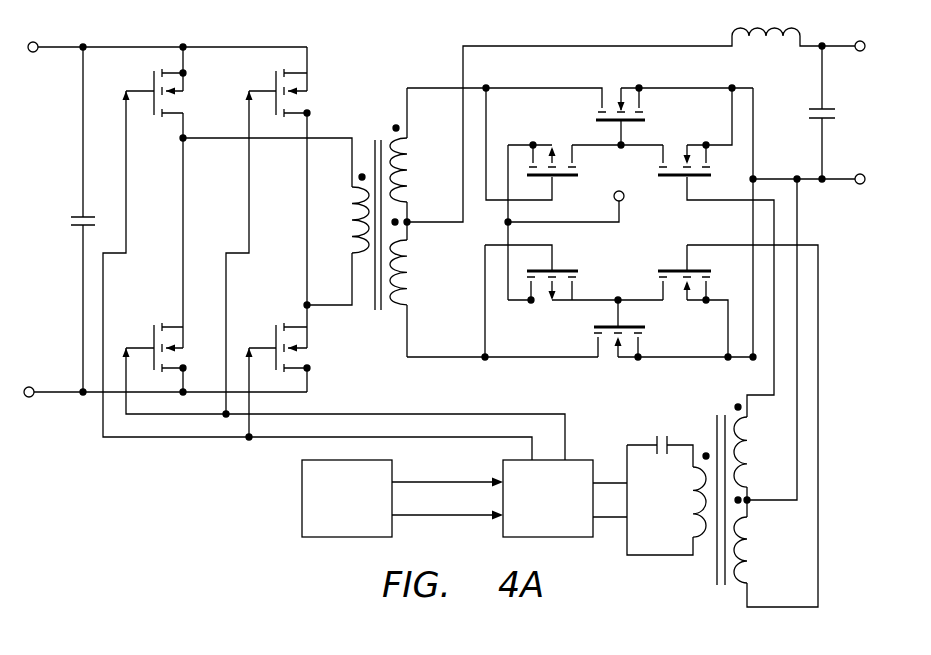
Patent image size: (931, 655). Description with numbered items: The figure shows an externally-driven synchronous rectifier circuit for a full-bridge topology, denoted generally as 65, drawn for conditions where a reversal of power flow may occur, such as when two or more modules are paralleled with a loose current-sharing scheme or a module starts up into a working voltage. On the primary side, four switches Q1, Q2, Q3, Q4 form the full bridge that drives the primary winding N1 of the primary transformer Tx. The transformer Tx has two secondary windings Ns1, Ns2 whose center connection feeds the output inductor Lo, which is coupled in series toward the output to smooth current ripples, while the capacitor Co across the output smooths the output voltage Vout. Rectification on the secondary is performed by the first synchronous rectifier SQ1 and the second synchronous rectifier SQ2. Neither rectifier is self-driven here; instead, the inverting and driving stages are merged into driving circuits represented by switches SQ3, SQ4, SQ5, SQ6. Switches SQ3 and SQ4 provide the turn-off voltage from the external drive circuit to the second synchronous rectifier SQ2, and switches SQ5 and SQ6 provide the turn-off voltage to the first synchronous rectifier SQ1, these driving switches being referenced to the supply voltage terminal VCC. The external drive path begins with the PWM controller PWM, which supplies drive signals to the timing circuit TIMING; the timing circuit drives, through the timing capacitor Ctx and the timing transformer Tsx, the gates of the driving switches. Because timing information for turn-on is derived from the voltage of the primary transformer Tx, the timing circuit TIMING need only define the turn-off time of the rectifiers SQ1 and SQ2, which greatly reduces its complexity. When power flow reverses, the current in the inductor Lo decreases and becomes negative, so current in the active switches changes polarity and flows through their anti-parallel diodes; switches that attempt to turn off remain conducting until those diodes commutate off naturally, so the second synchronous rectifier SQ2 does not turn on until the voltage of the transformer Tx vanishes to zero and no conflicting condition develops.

The externally-driven synchronous rectifier circuit for a full-bridge topology 65 is at (465, 307).
The switch Q1 is at (170, 347).
The switch Q2 is at (293, 347).
The switch Q3 is at (294, 93).
The switch Q4 is at (172, 93).
The first synchronous rectifier SQ1 is at (619, 353).
The second synchronous rectifier SQ2 is at (620, 105).
The switch SQ3 is at (684, 150).
The switch SQ4 is at (552, 150).
The switch SQ5 is at (684, 300).
The switch SQ6 is at (552, 300).
The capacitor Co is at (439, 219).
The inductor Lo is at (766, 21).
The primary transformer Tx is at (379, 205).
The primary winding N1 is at (350, 213).
The secondary winding Ns1 is at (416, 163).
The secondary winding Ns2 is at (416, 262).
The timing transformer Tsx is at (721, 482).
The timing capacitor Ctx is at (659, 437).
The supply voltage terminal VCC is at (618, 185).
The output voltage Vout is at (886, 114).
The PWM controller PWM is at (347, 498).
The timing circuit TIMING is at (548, 498).